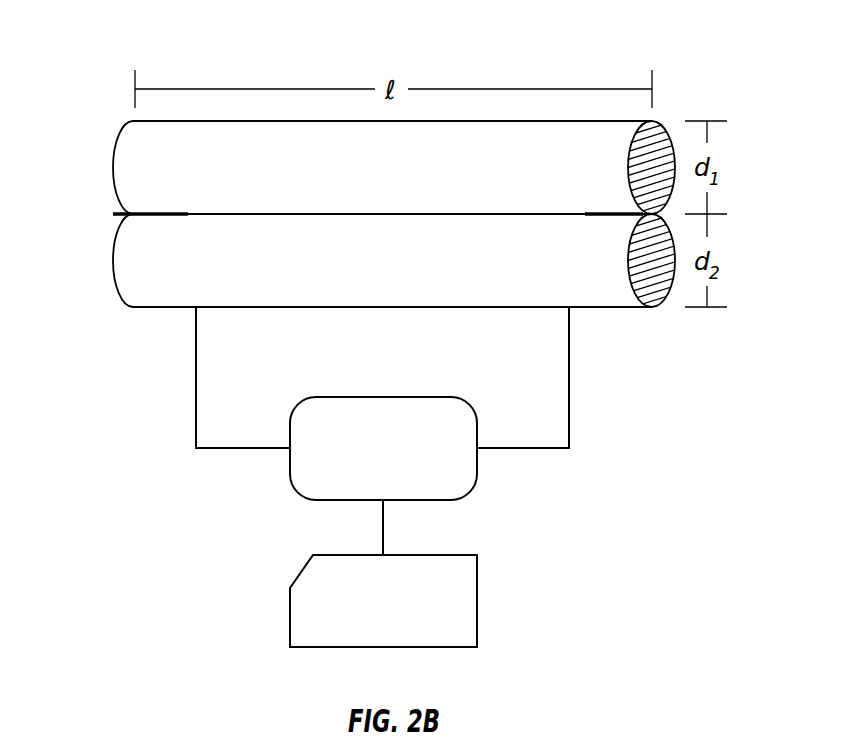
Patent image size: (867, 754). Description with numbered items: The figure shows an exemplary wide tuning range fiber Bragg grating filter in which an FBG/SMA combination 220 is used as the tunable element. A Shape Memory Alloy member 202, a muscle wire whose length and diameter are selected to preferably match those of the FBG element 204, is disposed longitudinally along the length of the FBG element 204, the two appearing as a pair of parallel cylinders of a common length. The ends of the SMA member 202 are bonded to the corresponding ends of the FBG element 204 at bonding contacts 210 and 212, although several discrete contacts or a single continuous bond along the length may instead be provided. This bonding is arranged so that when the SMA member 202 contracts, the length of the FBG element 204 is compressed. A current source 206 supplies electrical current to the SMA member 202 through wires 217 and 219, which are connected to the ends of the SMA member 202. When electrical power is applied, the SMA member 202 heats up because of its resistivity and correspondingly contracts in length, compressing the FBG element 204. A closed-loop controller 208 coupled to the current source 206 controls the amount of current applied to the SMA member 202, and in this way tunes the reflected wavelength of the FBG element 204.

The FBG/SMA combination 220 is at (704, 64).
The FBG element 204 is at (360, 172).
The Shape Memory Alloy (SMA) member 202 is at (360, 265).
The bonding contact 210 is at (174, 194).
The bonding contact 212 is at (591, 196).
The wire 217 is at (203, 377).
The wire 219 is at (561, 377).
The current source 206 is at (421, 451).
The closed-loop controller 208 is at (420, 601).